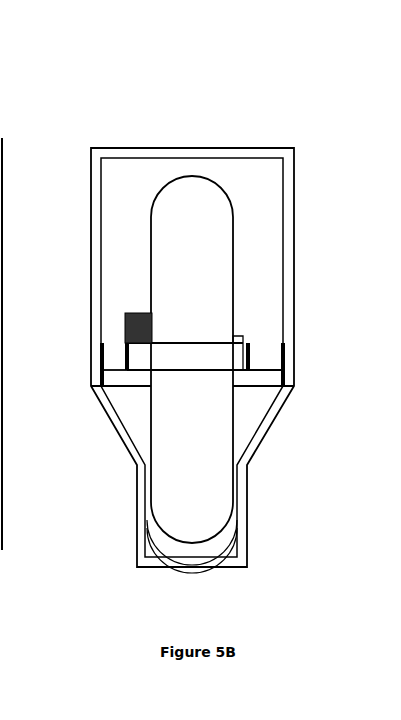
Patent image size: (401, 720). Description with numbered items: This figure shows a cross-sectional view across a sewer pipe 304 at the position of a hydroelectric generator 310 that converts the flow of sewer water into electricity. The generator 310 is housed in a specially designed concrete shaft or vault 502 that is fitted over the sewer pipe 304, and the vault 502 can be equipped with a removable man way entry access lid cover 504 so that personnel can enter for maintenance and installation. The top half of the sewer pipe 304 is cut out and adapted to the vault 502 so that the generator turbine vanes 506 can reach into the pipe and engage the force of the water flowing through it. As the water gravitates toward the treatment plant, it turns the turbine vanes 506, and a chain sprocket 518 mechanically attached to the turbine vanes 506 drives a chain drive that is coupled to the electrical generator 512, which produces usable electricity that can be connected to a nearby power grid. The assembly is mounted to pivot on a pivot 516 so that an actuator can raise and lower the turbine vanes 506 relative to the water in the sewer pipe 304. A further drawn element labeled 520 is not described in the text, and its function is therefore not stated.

The generator 310 is at (72, 102).
The removable man way entry access lid cover 504 is at (150, 148).
The concrete shaft or vault 502 is at (294, 245).
The generator turbine vanes 506 is at (165, 453).
The sewer pipe 304 is at (243, 540).
The pivot 516 is at (100, 374).
The clamp 520 is at (101, 345).
The chain sprocket 518 is at (243, 340).
The generator 512 is at (126, 313).